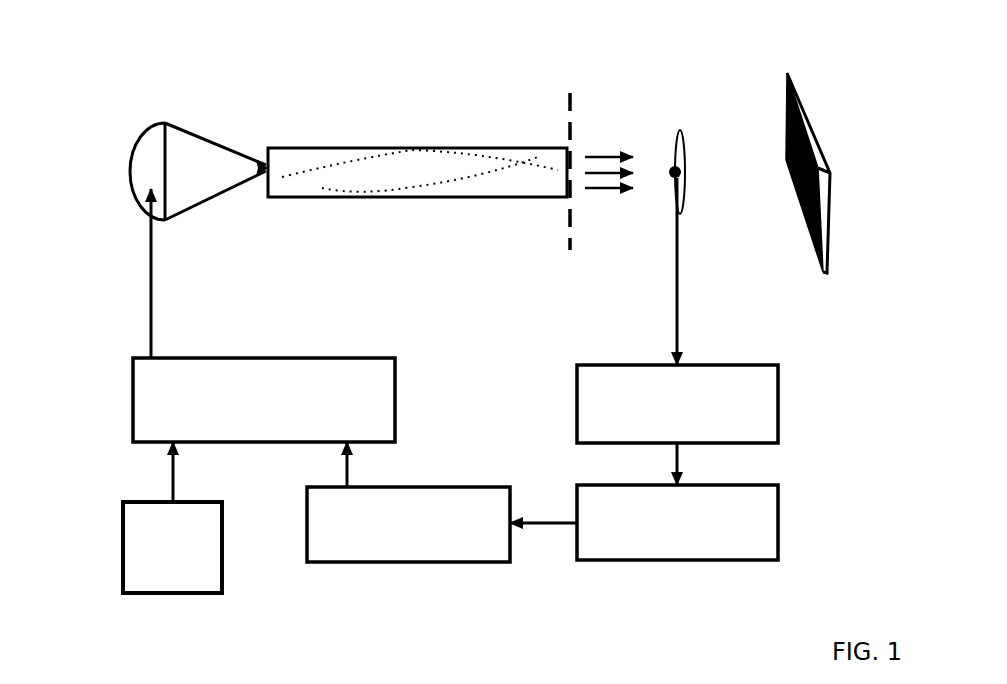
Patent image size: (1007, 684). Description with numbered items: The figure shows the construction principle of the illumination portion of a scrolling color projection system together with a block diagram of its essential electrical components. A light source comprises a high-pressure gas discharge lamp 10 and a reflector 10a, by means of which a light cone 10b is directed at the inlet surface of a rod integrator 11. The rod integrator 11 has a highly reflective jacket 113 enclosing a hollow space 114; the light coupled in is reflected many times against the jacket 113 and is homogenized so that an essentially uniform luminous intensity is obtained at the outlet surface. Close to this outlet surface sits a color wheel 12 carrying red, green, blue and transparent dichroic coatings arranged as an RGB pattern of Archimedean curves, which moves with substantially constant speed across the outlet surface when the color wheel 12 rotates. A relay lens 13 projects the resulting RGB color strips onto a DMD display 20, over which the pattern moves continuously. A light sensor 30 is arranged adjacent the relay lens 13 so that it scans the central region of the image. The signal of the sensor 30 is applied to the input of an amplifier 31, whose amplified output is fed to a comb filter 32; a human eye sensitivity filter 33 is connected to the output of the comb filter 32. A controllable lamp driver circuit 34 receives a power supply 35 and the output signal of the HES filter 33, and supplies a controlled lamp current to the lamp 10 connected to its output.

The lamp 10 is at (185, 188).
The reflector 10a is at (130, 143).
The light cone 10b is at (205, 136).
The rod integrator 11 is at (300, 117).
The highly reflective jacket 113 is at (357, 149).
The hollow space 114 is at (467, 173).
The color wheel 12 is at (570, 82).
The relay lens 13 is at (668, 122).
The light sensor 30 is at (695, 165).
The DMD display 20 is at (815, 91).
The amplifier 31 is at (677, 404).
The comb filter 32 is at (677, 522).
The HES filter 33 is at (408, 524).
The lamp driver circuit 34 is at (264, 400).
The power supply 35 is at (172, 547).